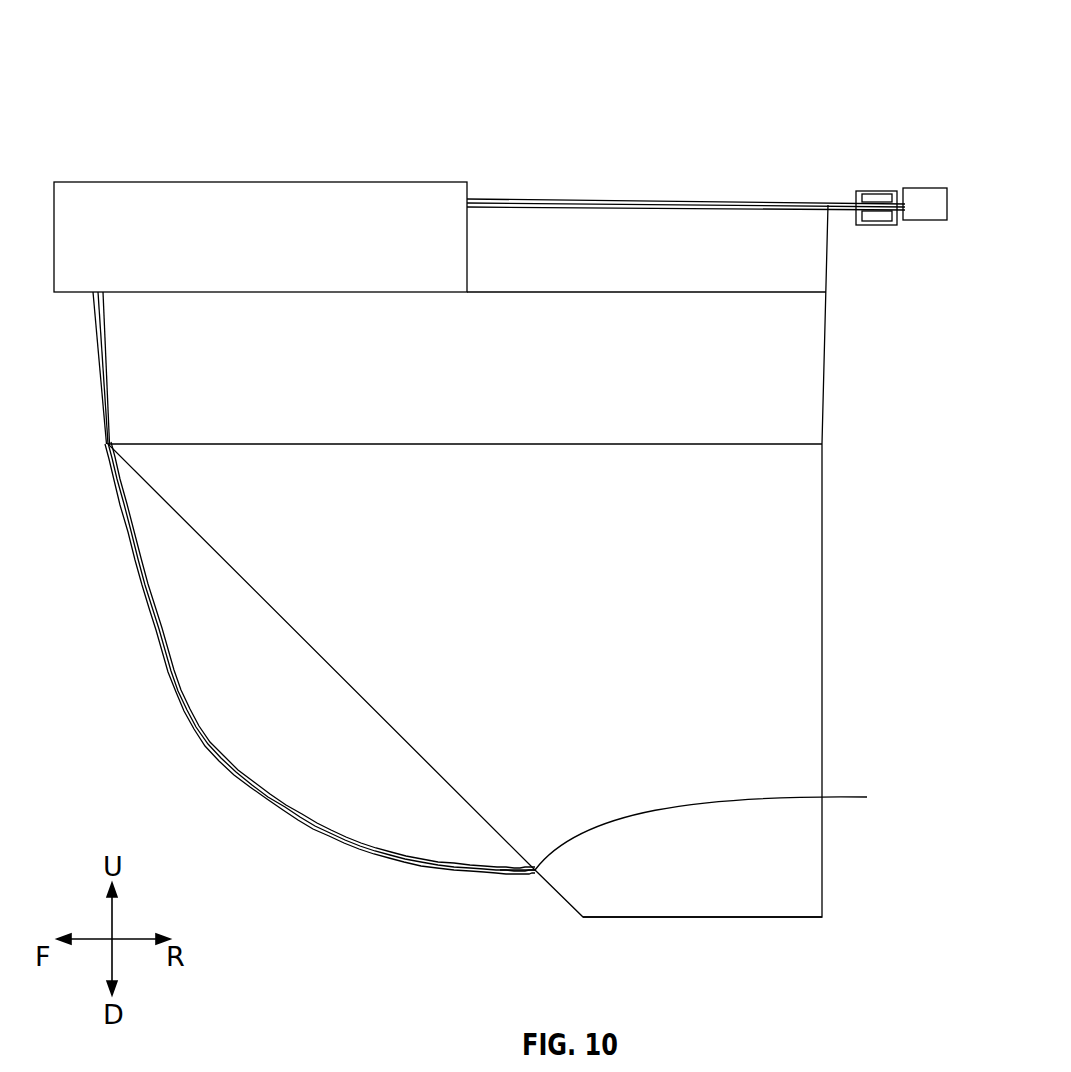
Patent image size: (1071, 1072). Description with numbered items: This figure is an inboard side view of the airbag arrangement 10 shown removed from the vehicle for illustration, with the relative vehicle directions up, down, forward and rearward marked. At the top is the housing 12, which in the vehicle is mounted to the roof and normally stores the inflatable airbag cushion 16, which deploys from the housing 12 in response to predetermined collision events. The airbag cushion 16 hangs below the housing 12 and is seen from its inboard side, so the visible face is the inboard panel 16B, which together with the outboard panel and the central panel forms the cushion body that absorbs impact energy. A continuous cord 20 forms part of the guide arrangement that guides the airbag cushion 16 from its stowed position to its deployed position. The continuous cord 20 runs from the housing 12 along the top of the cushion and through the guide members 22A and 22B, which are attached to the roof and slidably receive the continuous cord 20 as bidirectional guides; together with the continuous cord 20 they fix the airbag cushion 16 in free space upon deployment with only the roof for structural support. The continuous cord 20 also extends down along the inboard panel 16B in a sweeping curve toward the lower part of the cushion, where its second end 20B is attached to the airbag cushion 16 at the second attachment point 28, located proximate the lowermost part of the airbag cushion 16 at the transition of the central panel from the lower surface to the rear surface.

The airbag arrangement 10 is at (108, 56).
The housing 12 is at (124, 181).
The inflatable airbag cushion 16 is at (822, 519).
The inboard panel 16B is at (713, 880).
The continuous cord 20 is at (137, 573).
The second end of the continuous cord 20B is at (525, 873).
The guide member 22A is at (878, 227).
The guide member 22B is at (927, 187).
The second attachment point 28 is at (719, 826).